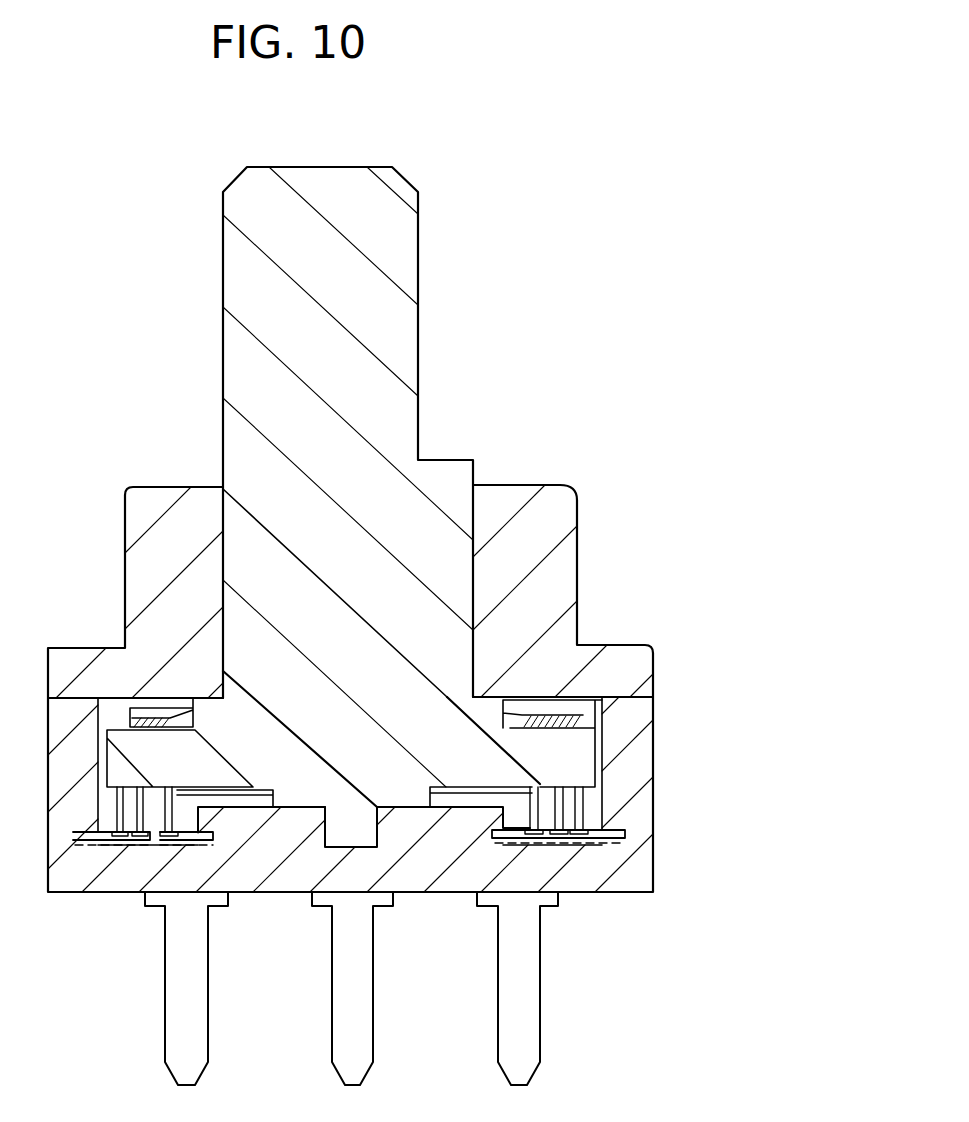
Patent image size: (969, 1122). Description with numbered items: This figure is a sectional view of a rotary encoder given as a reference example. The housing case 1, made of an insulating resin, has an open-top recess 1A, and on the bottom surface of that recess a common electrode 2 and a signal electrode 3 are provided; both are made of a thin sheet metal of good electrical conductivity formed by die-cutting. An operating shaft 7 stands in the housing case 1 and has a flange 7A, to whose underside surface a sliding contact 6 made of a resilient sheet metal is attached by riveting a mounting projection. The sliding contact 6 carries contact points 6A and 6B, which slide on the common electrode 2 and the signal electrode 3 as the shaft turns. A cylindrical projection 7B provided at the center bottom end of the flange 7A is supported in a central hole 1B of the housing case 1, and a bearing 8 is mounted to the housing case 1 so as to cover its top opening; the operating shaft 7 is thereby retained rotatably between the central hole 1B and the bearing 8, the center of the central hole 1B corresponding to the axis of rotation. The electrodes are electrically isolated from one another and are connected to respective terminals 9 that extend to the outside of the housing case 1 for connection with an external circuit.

The housing case 1 is at (640, 737).
The open-top recess 1A is at (603, 707).
The central hole 1B is at (340, 853).
The common electrode 2 is at (528, 832).
The signal electrode 3 is at (603, 838).
The sliding contact 6 is at (470, 795).
The contact point 6A is at (540, 790).
The contact point 6B is at (537, 798).
The operating shaft 7 is at (397, 338).
The flange 7A is at (573, 737).
The cylindrical projection 7B is at (367, 823).
The bearing 8 is at (513, 497).
The terminals 9 is at (528, 1033).